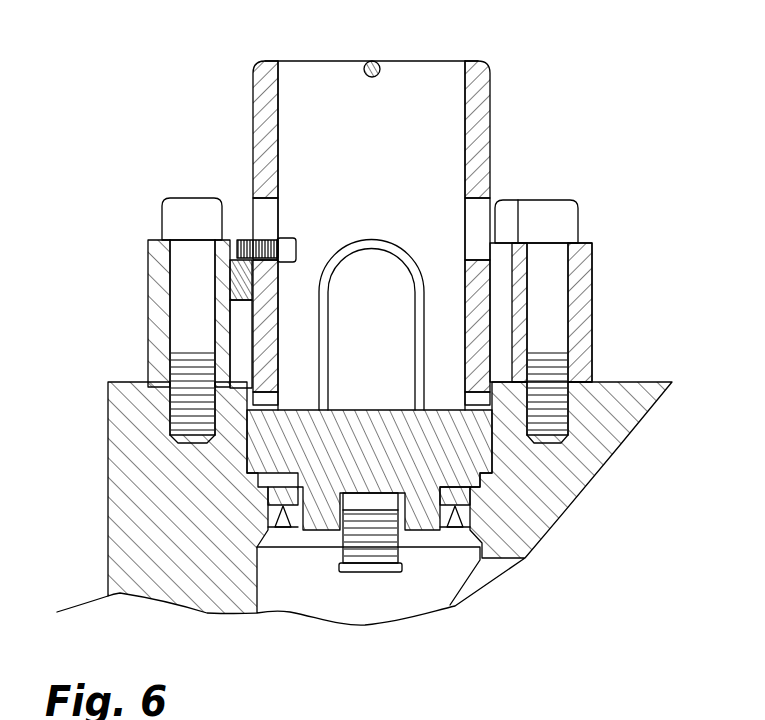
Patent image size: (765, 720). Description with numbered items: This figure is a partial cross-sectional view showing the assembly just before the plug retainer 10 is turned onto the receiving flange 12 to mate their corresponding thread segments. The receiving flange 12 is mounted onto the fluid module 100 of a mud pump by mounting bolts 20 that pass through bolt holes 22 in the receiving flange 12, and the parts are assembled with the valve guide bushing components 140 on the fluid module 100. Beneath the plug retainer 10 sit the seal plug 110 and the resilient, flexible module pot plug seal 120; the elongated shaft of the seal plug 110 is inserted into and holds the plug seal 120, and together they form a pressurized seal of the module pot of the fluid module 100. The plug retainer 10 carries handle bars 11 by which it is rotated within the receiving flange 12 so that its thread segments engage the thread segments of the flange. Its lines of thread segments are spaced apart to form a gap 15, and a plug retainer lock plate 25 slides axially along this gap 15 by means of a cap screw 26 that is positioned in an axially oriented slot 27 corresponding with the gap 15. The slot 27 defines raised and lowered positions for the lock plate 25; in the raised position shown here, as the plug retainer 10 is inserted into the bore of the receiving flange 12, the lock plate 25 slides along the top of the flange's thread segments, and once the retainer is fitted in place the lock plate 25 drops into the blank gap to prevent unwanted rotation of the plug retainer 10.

The plug retainer 10 is at (353, 172).
The handle bars 11 is at (377, 62).
The receiving flange 12 is at (158, 296).
The gap 15 is at (250, 345).
The mounting bolts 20 is at (562, 232).
The bolt holes 22 is at (574, 302).
The plug retainer lock plate 25 is at (232, 258).
The cap screw 26 is at (250, 212).
The slot 27 is at (247, 243).
The fluid module 100 is at (127, 483).
The seal plug 110 is at (478, 452).
The module pot plug seal 120 is at (465, 497).
The valve guide bushing components 140 is at (348, 570).